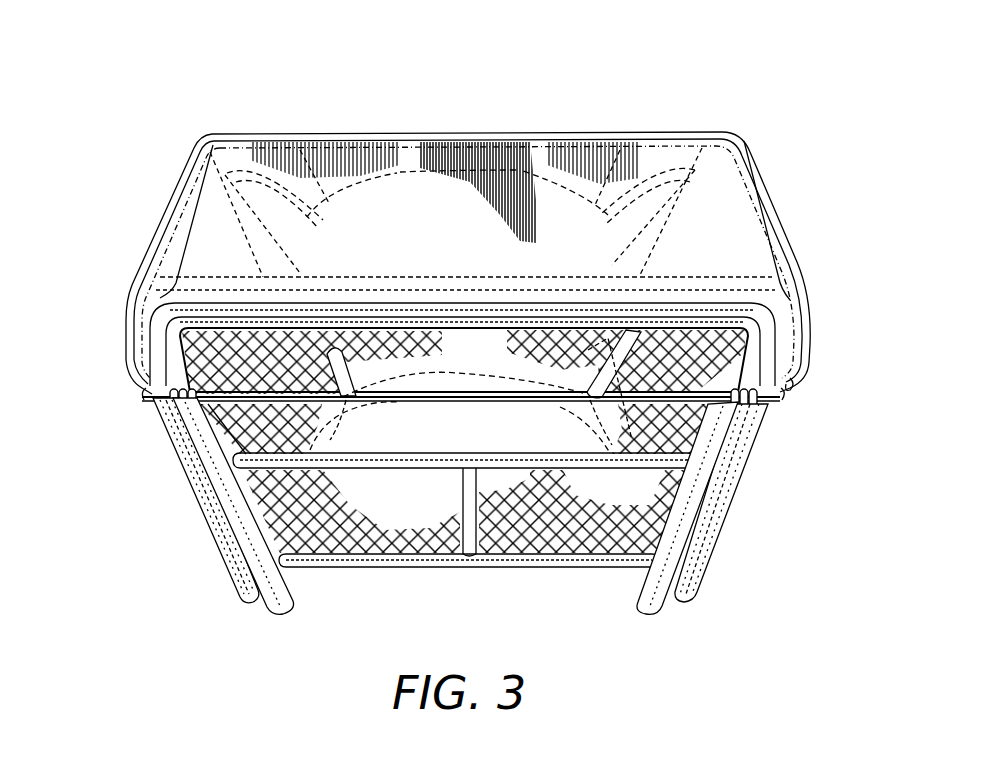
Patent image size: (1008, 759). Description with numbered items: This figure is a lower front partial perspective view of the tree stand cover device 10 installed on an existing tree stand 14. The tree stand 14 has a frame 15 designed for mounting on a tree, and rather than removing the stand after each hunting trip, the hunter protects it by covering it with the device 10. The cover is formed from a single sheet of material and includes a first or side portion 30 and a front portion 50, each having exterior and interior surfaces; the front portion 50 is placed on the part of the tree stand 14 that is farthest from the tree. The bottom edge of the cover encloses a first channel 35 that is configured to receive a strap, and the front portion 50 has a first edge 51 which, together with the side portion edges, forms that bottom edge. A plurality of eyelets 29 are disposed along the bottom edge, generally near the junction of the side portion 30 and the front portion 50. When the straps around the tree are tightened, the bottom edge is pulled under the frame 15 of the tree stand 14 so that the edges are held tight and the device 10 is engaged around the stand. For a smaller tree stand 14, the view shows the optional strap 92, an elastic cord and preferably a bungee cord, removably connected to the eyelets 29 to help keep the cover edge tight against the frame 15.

The tree stand cover device 10 is at (752, 108).
The tree stand 14 is at (680, 157).
The frame 15 is at (257, 548).
The eyelets 29 is at (148, 392).
The first or side portion 30 is at (754, 474).
The first channel 35 is at (190, 477).
The front portion 50 is at (307, 142).
The first edge of front portion 51 is at (468, 320).
The optional strap 92 is at (438, 402).